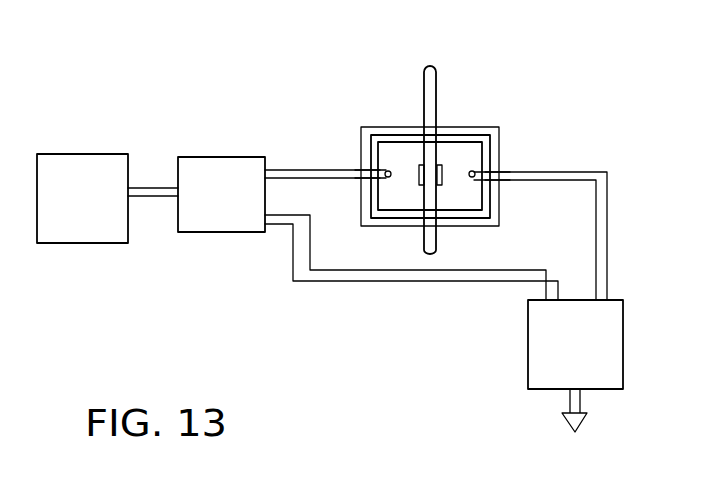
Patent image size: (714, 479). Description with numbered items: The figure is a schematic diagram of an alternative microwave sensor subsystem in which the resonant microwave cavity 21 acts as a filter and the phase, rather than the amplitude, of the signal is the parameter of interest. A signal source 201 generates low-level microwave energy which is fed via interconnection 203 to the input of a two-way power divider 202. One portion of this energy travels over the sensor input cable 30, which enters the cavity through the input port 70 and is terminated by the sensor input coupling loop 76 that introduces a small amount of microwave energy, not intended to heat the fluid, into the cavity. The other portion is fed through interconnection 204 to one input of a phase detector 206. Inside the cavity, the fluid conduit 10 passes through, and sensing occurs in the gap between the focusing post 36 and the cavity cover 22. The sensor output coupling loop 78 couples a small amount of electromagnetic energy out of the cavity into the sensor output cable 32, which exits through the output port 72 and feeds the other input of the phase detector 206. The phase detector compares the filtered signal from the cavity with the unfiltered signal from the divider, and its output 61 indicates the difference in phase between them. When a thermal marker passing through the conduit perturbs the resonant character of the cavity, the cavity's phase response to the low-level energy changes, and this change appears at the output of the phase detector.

The fluid conduit 10 is at (440, 72).
The microwave resonant cavity 21 is at (455, 150).
The cavity cover 22 is at (392, 126).
The sensor input cable 30 is at (330, 180).
The sensor output cable 32 is at (550, 182).
The focusing post 36 is at (445, 185).
The phase detector output 61 is at (570, 395).
The input port 70 is at (362, 170).
The output port 72 is at (500, 172).
The sensor input coupling loop 76 is at (385, 165).
The sensor output coupling loop 78 is at (475, 170).
The signal source 201 is at (72, 153).
The two-way power divider 202 is at (232, 157).
The interconnection 203 is at (153, 200).
The interconnection 204 is at (390, 282).
The phase detector 206 is at (528, 357).